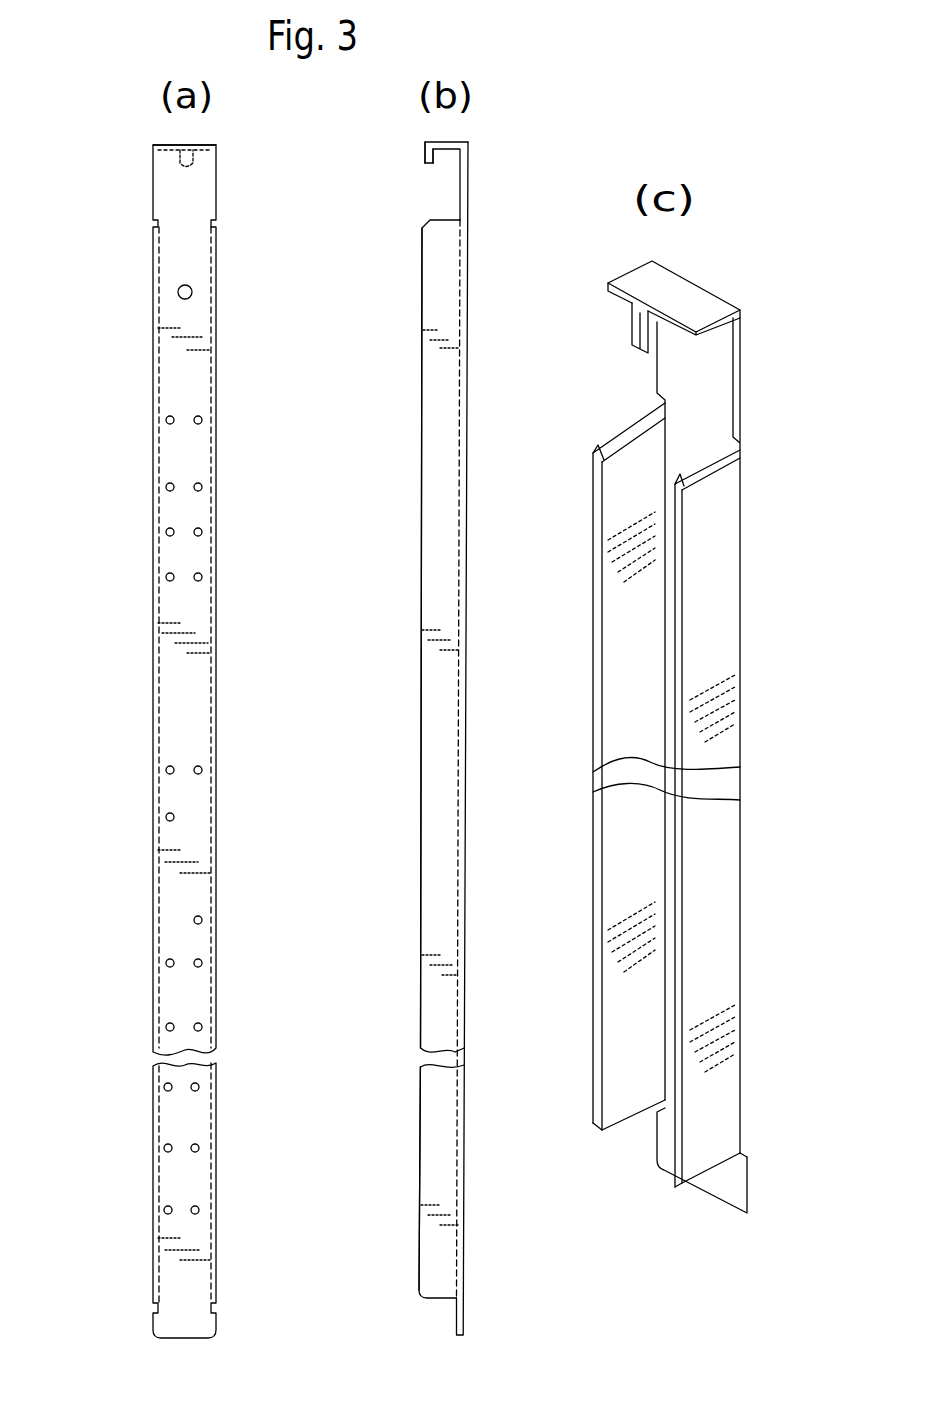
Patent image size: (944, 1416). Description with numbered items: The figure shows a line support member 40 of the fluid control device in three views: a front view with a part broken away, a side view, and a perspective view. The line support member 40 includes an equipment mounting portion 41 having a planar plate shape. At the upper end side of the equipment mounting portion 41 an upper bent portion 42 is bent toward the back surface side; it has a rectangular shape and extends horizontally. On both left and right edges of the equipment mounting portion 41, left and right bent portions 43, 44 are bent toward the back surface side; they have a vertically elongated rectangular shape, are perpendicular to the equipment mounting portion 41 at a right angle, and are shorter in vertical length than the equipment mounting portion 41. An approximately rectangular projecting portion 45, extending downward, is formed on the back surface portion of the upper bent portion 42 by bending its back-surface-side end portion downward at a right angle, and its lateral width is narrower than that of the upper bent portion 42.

The line support member 40 is at (300, 718).
The equipment mounting portion 41 is at (180, 735).
The upper bent portion 42 is at (155, 146).
The left bent portion 43 is at (153, 922).
The right bent portion 44 is at (216, 940).
The projecting portion 45 is at (186, 166).